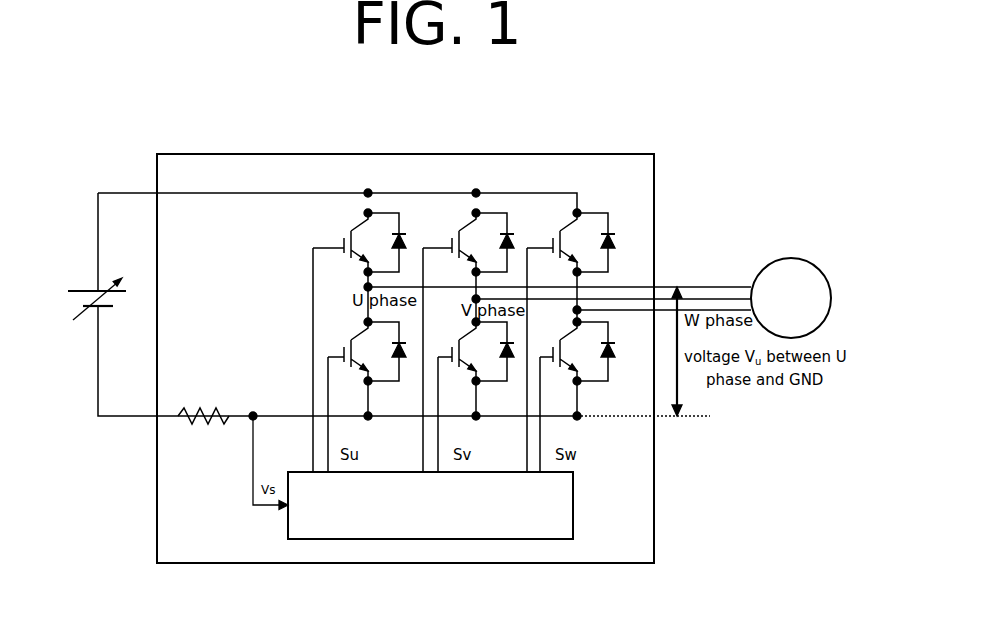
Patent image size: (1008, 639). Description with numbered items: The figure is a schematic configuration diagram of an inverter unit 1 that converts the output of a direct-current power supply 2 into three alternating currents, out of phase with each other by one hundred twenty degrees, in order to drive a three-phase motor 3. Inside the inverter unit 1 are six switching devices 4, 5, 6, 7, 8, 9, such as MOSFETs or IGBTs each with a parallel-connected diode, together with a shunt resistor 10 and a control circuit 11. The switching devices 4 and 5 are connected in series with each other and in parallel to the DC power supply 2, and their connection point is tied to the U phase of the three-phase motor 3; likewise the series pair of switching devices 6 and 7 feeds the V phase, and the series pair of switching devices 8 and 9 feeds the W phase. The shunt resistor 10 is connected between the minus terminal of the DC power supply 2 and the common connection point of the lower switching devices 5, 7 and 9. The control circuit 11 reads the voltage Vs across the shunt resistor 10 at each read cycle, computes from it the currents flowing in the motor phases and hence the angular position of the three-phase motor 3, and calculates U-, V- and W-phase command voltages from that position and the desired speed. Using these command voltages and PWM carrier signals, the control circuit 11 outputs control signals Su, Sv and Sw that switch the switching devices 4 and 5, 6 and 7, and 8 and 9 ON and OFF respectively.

The inverter unit 1 is at (405, 153).
The direct-current power supply 2 is at (88, 290).
The three-phase motor 3 is at (793, 259).
The switching device 4 is at (360, 228).
The switching device 5 is at (358, 340).
The switching device 6 is at (466, 228).
The switching device 7 is at (466, 340).
The switching device 8 is at (567, 228).
The switching device 9 is at (568, 342).
The shunt resistor 10 is at (207, 410).
The control circuit 11 is at (573, 505).